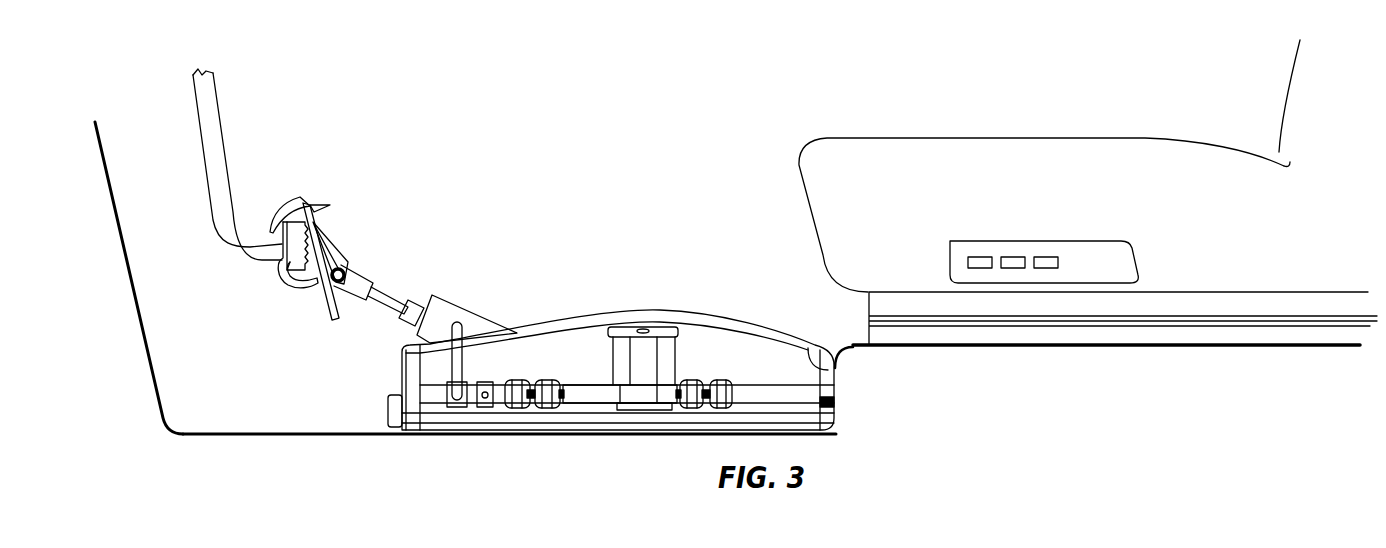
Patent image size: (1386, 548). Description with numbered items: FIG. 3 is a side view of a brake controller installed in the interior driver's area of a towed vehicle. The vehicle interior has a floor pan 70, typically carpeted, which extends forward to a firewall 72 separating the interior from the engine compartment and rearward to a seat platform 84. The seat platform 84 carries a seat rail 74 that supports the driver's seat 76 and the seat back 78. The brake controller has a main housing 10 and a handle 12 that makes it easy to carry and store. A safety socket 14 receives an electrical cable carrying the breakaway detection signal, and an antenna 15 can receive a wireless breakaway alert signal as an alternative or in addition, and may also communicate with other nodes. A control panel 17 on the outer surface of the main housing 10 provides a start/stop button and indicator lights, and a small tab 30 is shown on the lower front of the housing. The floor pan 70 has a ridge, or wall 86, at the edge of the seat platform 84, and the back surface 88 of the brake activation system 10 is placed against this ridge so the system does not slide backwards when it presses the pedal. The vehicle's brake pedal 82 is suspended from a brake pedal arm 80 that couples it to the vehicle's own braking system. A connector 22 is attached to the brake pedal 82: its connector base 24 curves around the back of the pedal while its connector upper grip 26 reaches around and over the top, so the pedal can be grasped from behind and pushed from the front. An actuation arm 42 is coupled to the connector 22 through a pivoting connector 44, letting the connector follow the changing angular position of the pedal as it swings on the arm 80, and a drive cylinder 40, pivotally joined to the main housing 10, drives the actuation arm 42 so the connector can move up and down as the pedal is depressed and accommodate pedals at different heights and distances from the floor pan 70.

The main housing 10 is at (697, 327).
The handle 12 is at (593, 407).
The safety socket 14 is at (485, 407).
The antenna 15 is at (440, 336).
The control panel 17 is at (673, 327).
The connector 22 is at (330, 235).
The connector base 24 is at (300, 292).
The connector upper grip 26 is at (287, 197).
The tab 30 is at (388, 410).
The drive cylinder 40 is at (470, 310).
The actuation arm 42 is at (385, 290).
The pivoting connector 44 is at (352, 270).
The floor pan 70 is at (328, 436).
The firewall 72 is at (140, 332).
The seat rail 74 is at (1209, 312).
The driver's seat 76 is at (1030, 137).
The seat back 78 is at (1291, 78).
The brake pedal arm 80 is at (223, 140).
The brake pedal 82 is at (283, 245).
The seat platform 84 is at (1265, 348).
The wall 86 is at (840, 385).
The back surface 88 is at (818, 352).